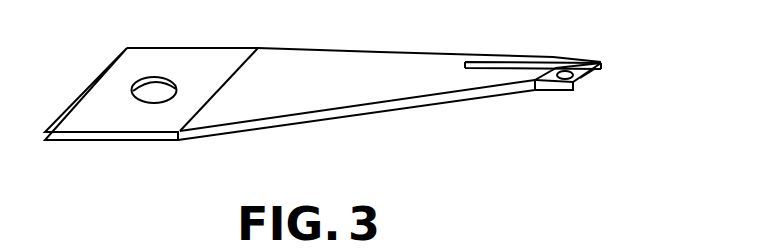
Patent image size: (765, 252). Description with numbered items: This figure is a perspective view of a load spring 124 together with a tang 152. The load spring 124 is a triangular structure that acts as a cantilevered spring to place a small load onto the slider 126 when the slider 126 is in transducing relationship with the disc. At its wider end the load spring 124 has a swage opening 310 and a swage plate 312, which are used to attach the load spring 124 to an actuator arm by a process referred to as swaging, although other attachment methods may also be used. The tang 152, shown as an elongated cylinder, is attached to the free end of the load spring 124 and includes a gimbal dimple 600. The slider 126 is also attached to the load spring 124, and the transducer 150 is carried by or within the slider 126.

The swage plate 312 is at (182, 50).
The swage opening 310 is at (134, 84).
The load spring 124 is at (363, 114).
The slider 126 is at (545, 93).
The transducer 150 is at (585, 76).
The tang 152 is at (605, 53).
The gimbal dimple 600 is at (566, 72).